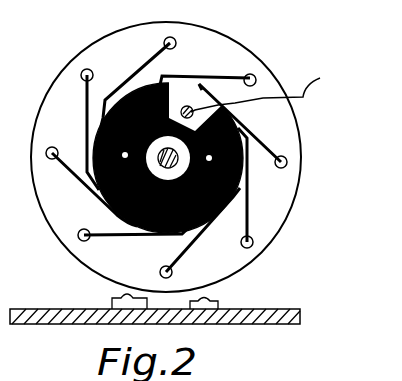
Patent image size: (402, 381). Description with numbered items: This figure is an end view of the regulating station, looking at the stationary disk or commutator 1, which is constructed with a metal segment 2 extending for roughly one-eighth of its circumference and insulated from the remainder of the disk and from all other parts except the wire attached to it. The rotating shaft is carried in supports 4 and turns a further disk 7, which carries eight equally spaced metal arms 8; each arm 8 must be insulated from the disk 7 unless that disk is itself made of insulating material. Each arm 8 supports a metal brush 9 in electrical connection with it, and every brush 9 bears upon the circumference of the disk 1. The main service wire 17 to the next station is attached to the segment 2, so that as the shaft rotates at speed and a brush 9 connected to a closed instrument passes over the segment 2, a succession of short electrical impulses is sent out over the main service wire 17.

The stationary disk or commutator 1 is at (243, 178).
The metal segment 2 is at (183, 93).
The supports 4 is at (200, 294).
The disk 7 is at (229, 55).
The metal arms 8 is at (173, 38).
The metal brush 9 is at (147, 62).
The main service wire 17 is at (262, 88).